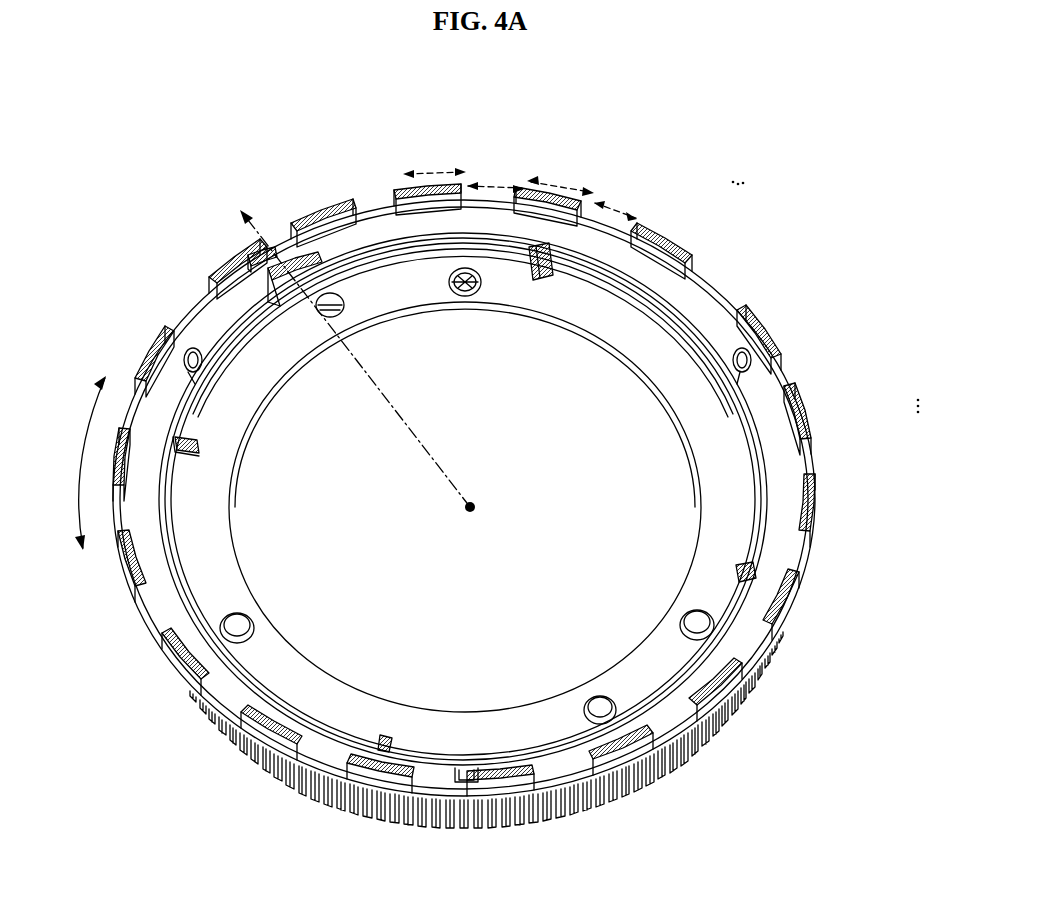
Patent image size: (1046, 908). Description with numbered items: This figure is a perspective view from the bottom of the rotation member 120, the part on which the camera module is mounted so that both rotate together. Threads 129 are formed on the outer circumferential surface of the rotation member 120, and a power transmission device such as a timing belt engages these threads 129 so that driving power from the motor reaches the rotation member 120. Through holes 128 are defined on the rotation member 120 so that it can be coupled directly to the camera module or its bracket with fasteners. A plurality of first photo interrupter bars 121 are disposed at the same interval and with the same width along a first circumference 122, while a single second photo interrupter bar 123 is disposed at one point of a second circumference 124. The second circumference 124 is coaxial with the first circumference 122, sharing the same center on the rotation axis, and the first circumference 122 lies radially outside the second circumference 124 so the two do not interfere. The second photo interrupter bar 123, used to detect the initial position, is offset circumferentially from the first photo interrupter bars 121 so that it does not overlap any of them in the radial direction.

The rotation member 120 is at (456, 95).
The first photo interrupter bars 121 is at (678, 240).
The first circumference 122 is at (810, 465).
The second photo interrupter bar 123 is at (252, 254).
The second circumference 124 is at (233, 334).
The through holes 128 is at (232, 627).
The threads 129 is at (730, 713).